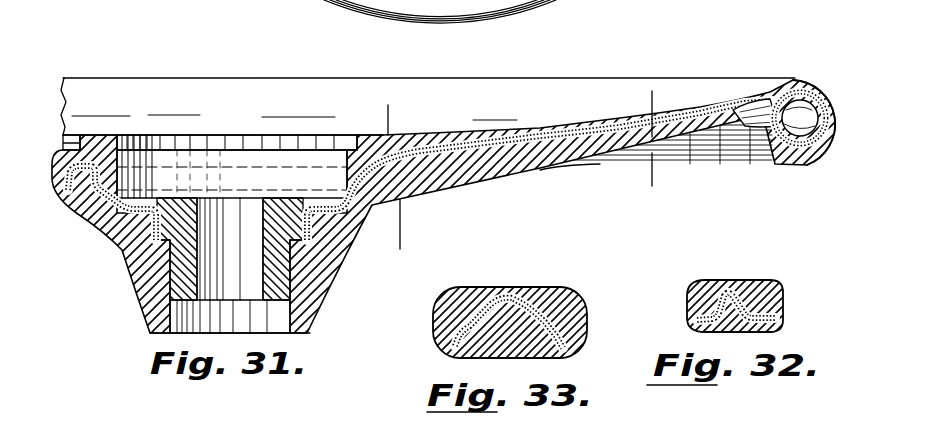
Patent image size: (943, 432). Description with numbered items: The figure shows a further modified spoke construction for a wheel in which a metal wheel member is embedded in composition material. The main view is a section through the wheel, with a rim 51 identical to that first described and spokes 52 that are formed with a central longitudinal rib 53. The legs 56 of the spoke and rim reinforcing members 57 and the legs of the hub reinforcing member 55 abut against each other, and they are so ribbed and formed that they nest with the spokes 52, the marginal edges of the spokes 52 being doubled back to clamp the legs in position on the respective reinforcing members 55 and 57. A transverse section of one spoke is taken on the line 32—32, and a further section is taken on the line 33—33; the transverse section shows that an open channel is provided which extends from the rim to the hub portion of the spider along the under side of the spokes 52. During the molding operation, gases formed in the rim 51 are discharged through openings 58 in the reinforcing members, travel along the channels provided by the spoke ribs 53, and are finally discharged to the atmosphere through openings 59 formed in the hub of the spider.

In FIG. 31, the section line 32— 32 is at (660, 91).
In FIG. 31, the section line 33— 33 is at (407, 105).
In FIG. 31, the rim 51 is at (793, 81).
In FIG. 31, the spoke 52 is at (543, 130).
In FIG. 33, the spoke 52 is at (553, 302).
In FIG. 32, the central longitudinal rib 53 is at (737, 282).
In FIG. 31, the hub reinforcing member 55 is at (372, 198).
In FIG. 33, the hub reinforcing member 55 is at (484, 334).
In FIG. 31, the legs of spoke and rim reinforcing member 56 is at (549, 168).
In FIG. 32, the legs of spoke and rim reinforcing member 56 is at (745, 331).
In FIG. 31, the spoke and rim reinforcing member 57 is at (822, 145).
In FIG. 31, the opening in reinforcing member 58 is at (737, 108).
In FIG. 31, the opening in hub 59 is at (343, 191).